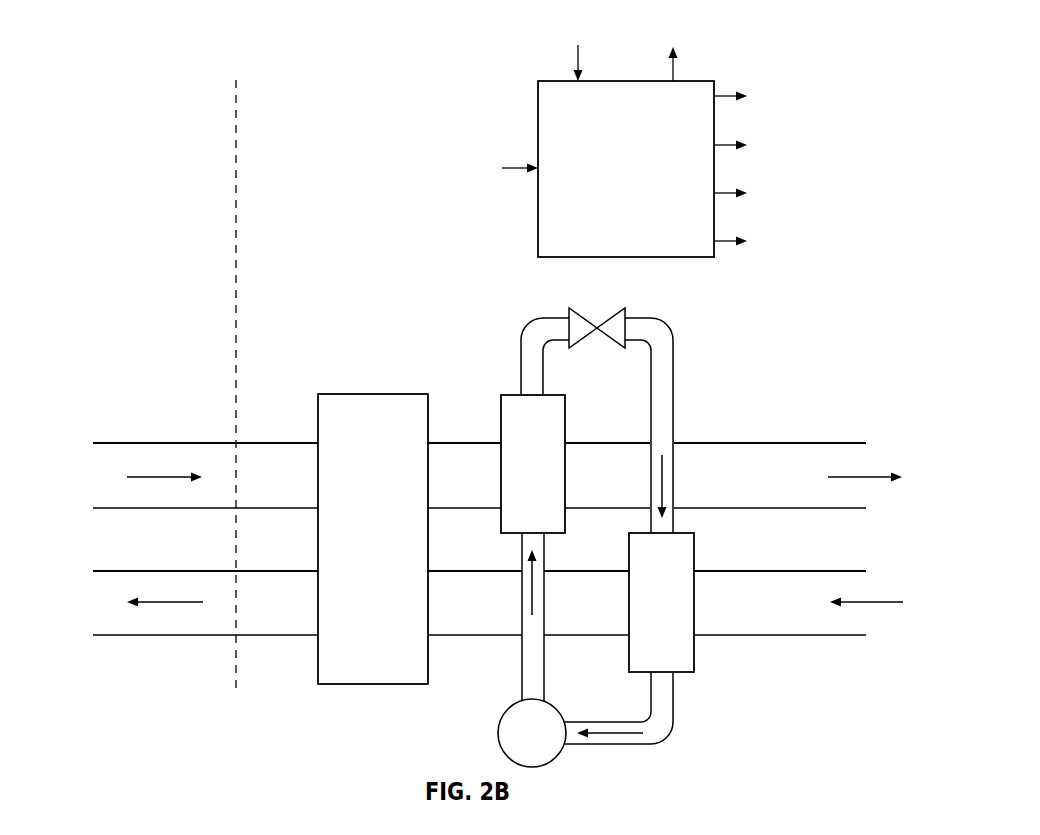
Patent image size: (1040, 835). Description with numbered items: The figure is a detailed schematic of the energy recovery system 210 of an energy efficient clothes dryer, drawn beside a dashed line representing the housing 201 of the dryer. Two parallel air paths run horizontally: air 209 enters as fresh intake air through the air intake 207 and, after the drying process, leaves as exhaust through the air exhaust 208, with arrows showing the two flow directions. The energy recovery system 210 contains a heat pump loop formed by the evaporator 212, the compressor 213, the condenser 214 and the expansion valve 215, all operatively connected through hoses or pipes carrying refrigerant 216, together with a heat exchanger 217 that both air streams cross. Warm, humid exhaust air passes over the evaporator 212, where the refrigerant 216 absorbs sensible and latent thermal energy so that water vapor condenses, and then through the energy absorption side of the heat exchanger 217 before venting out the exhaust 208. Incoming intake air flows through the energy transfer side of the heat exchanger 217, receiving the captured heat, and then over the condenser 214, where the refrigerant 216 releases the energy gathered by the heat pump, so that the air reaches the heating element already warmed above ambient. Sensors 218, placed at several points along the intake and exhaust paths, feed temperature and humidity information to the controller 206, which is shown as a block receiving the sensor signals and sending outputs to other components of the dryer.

The energy recovery system 210 is at (131, 60).
The housing 201 is at (236, 228).
The controller 206 is at (645, 181).
The air intake 207 is at (130, 443).
The air exhaust 208 is at (130, 635).
The air 209 is at (165, 477).
The evaporator 212 is at (680, 613).
The compressor 213 is at (551, 745).
The condenser 214 is at (552, 477).
The expansion valve 215 is at (625, 310).
The refrigerant 216 is at (675, 493).
The heat exchanger 217 is at (392, 552).
The sensors 218 is at (307, 470).